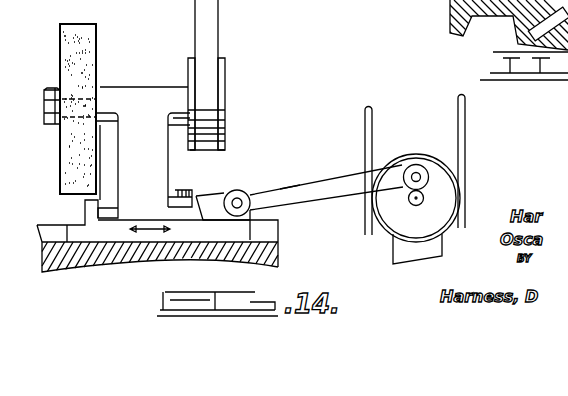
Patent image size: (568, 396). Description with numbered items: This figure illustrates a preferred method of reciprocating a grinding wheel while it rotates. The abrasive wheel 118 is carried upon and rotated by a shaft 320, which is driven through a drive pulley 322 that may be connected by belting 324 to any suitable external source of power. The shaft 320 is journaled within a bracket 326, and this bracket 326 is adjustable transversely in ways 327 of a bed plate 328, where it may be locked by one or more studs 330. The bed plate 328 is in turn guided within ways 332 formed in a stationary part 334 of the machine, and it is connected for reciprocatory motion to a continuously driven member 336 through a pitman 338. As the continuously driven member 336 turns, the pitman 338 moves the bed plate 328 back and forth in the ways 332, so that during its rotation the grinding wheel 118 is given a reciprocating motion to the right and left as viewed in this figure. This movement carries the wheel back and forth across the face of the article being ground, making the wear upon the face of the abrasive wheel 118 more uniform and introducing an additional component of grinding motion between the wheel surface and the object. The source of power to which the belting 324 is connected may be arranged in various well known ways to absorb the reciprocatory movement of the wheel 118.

The grinding wheel 118 is at (90, 55).
The shaft 320 is at (102, 86).
The drive pulley 322 is at (225, 63).
The belting 324 is at (213, 18).
The bracket 326 is at (118, 160).
The ways 327 is at (110, 212).
The bed plate 328 is at (198, 197).
The studs 330 is at (183, 190).
The ways 332 is at (267, 232).
The stationary part 334 is at (118, 254).
The continuously driven member 336 is at (443, 197).
The pitman 338 is at (288, 188).